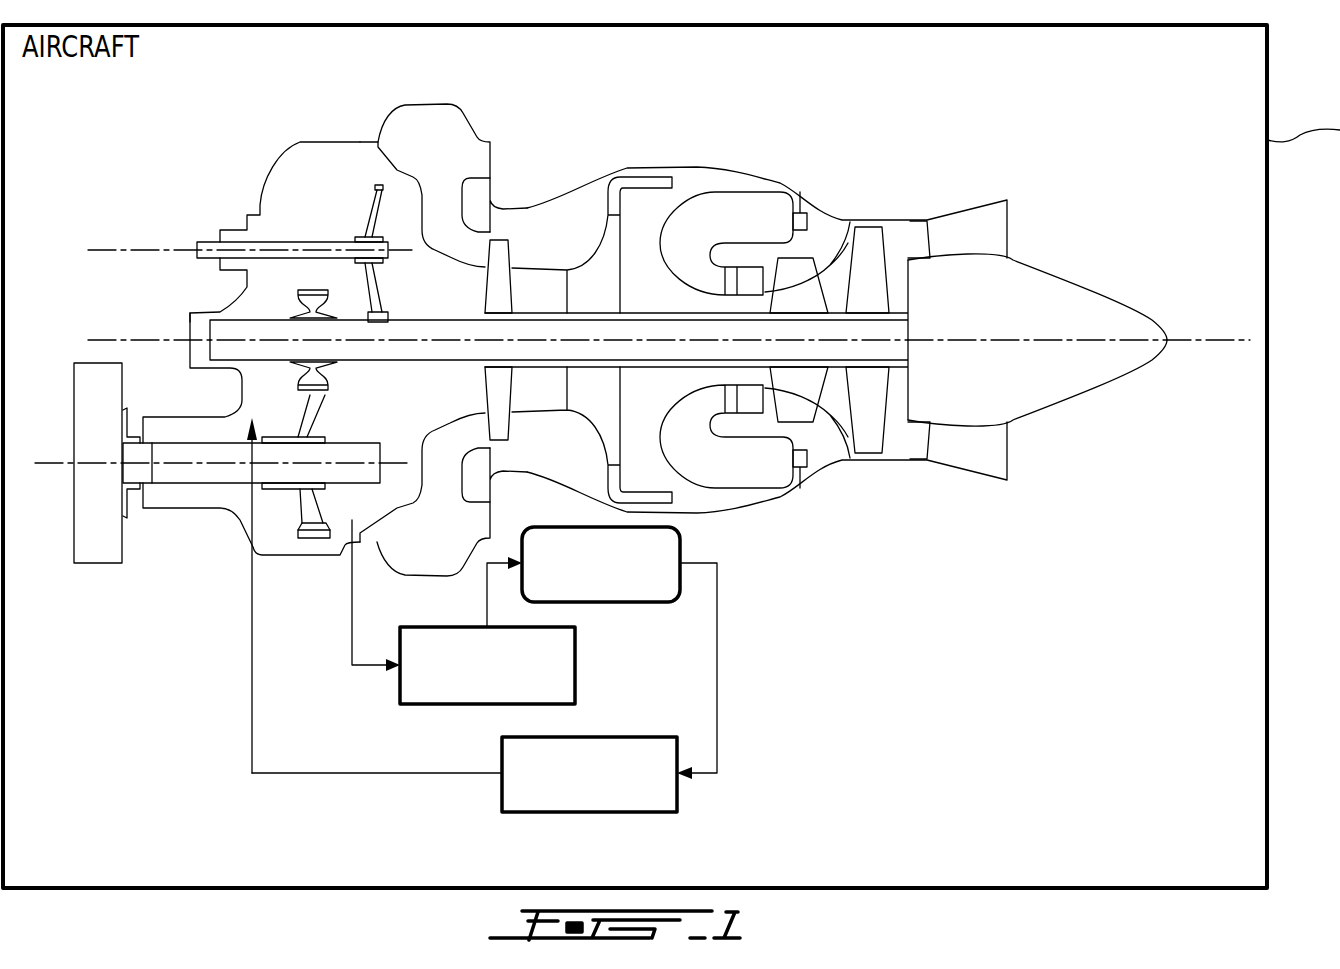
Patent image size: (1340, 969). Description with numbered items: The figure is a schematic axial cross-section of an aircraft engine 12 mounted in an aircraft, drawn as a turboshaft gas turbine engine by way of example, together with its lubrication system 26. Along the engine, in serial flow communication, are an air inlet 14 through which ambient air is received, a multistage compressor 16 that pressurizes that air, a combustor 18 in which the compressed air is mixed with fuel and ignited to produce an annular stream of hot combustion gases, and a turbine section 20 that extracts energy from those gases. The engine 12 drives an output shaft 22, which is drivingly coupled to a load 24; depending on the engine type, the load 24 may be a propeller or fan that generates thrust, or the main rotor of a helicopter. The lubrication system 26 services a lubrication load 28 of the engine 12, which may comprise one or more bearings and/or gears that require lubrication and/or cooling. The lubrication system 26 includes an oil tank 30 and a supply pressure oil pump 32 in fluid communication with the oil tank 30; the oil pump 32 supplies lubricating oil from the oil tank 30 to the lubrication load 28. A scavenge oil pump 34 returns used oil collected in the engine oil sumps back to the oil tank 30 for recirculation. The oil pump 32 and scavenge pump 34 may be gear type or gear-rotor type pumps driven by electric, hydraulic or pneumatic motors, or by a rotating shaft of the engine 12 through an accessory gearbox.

The aircraft engine 12 is at (1036, 148).
The air inlet 14 is at (410, 147).
The multistage compressor 16 is at (533, 293).
The combustor 18 is at (710, 218).
The turbine section 20 is at (867, 263).
The output shaft 22 is at (197, 473).
The load 24 is at (100, 565).
The lubrication system 26 is at (202, 695).
The lubrication load 28 is at (262, 395).
The oil tank 30 is at (682, 585).
The supply pressure oil pump 32 is at (500, 791).
The scavenge oil pump 34 is at (576, 667).